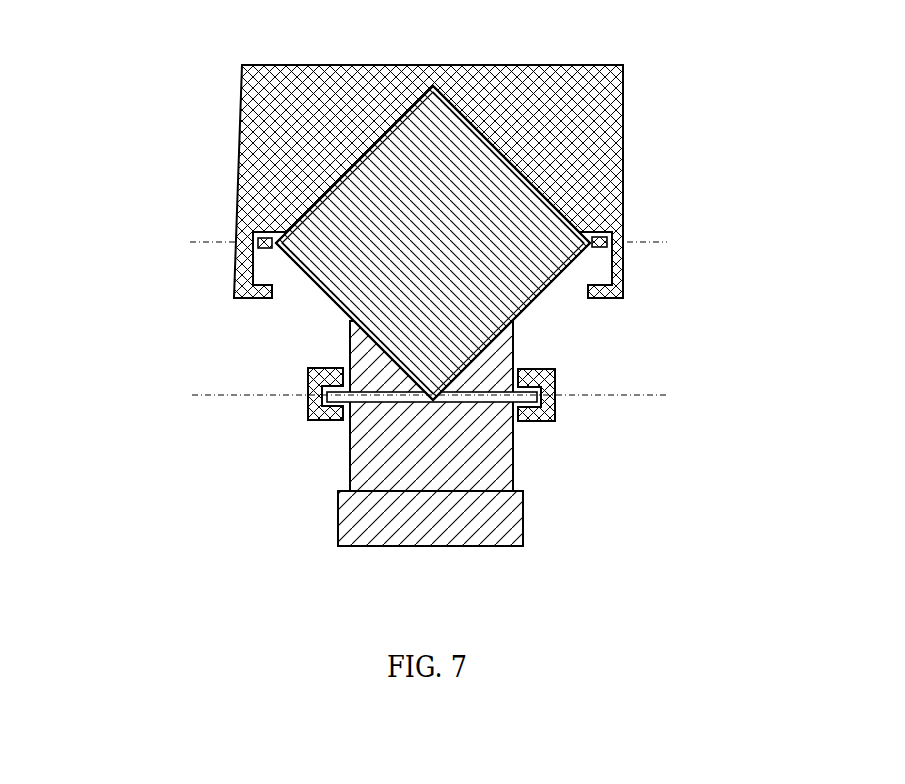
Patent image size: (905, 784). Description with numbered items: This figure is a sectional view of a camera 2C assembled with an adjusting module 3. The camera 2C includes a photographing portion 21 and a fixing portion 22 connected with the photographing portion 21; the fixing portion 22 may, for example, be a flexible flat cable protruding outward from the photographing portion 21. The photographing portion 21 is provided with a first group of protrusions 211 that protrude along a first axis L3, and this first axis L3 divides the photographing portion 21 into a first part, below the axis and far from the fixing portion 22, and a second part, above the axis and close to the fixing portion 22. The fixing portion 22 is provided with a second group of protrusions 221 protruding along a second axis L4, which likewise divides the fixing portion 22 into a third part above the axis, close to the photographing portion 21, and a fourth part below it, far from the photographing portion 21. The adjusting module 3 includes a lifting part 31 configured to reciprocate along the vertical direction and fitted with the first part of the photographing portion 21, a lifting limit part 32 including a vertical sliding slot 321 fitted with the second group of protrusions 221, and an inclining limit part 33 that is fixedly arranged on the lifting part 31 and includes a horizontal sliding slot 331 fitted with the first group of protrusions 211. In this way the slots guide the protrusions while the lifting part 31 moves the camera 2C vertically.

The adjusting module 3 is at (428, 177).
The lifting part 31 is at (238, 110).
The first group of protrusions 211 is at (237, 228).
The horizontal sliding slot 331 is at (237, 263).
The inclining limit part 33 is at (237, 292).
The first axis L3 is at (445, 243).
The photographing portion 21 is at (540, 296).
The lifting limit part 32 is at (438, 379).
The vertical sliding slot 321 is at (320, 392).
The second group of protrusions 221 is at (325, 402).
The second axis L4 is at (446, 395).
The fixing portion 22 is at (355, 508).
The camera 2C is at (385, 459).